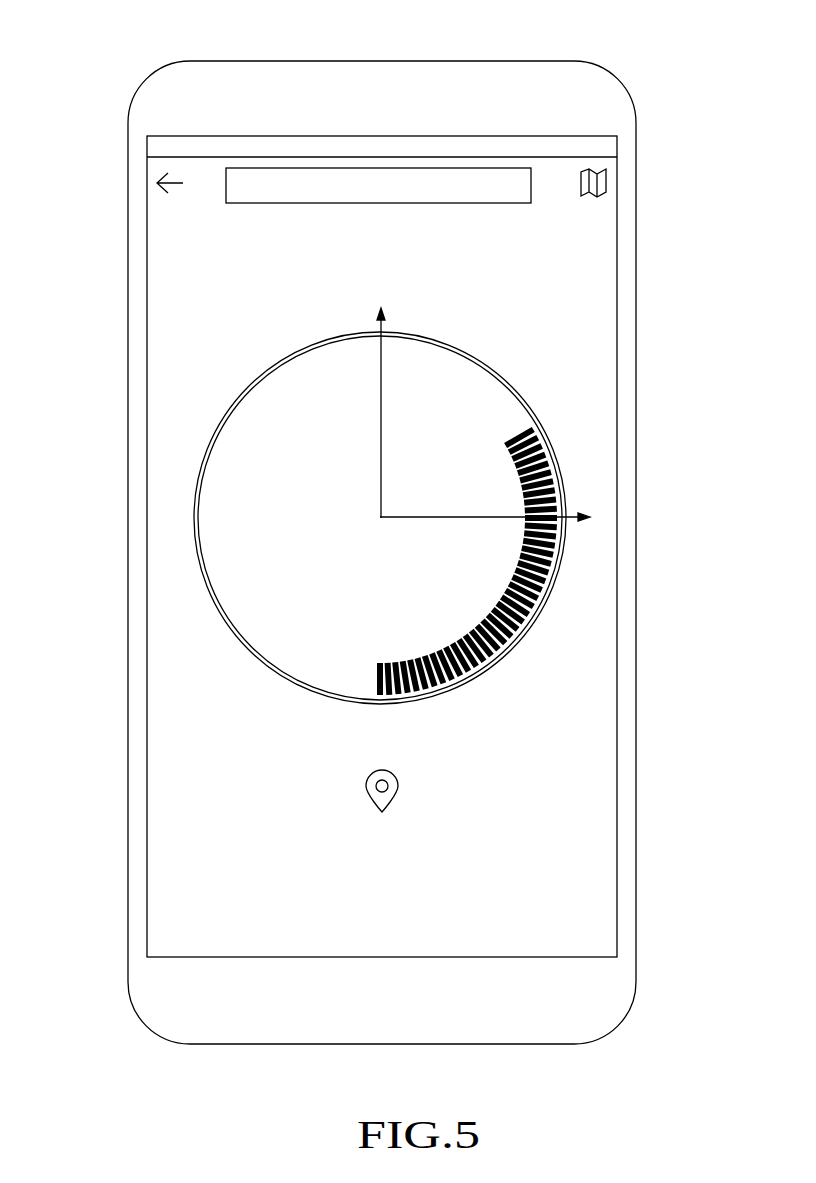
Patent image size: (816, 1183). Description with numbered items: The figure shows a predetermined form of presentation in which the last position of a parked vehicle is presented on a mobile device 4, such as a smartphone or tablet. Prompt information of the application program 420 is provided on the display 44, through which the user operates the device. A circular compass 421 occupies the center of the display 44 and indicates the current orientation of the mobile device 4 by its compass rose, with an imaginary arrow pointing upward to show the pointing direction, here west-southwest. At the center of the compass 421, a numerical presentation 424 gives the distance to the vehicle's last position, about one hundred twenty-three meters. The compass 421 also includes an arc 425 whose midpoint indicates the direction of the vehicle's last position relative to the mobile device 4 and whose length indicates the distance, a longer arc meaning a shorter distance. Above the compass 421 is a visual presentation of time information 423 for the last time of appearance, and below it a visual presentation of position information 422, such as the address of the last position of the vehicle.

The mobile device 4 is at (128, 195).
The display 44 is at (563, 756).
The application program 420 is at (387, 167).
The compass 421 is at (258, 386).
The position information 422 is at (578, 877).
The time information 423 is at (585, 251).
The numerical presentation 424 is at (335, 515).
The arc 425 is at (548, 578).